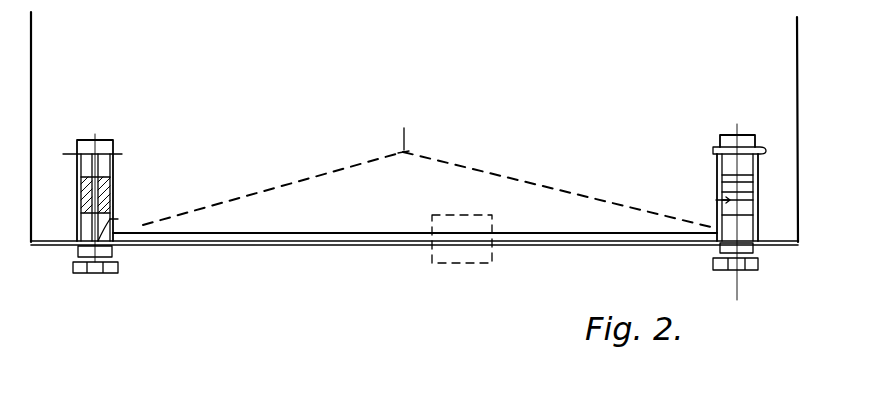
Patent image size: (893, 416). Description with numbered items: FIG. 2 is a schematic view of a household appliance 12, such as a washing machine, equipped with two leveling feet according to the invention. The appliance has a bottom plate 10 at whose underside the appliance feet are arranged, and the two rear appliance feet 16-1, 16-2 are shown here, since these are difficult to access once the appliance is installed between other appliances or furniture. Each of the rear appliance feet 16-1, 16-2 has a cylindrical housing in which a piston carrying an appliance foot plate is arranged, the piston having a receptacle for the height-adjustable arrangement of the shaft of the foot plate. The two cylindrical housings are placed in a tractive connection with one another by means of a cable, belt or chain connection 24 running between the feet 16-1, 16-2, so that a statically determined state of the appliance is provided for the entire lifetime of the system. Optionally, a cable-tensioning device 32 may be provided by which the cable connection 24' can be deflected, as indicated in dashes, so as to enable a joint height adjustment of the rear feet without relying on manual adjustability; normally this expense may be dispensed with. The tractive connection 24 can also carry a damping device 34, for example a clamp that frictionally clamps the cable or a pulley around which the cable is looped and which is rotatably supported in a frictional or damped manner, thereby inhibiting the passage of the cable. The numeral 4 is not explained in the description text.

The bottom plate 10 is at (363, 245).
The household appliance 12 is at (798, 125).
The rear appliance foot 16-1 is at (107, 277).
The rear appliance foot 16-2 is at (737, 272).
The cable, belt or chain connection 24 is at (305, 178).
The deflected cable connection 24' is at (429, 147).
The cable-tensioning device 32 is at (411, 127).
The damping device 34 is at (460, 267).
The deflection 4 is at (404, 128).